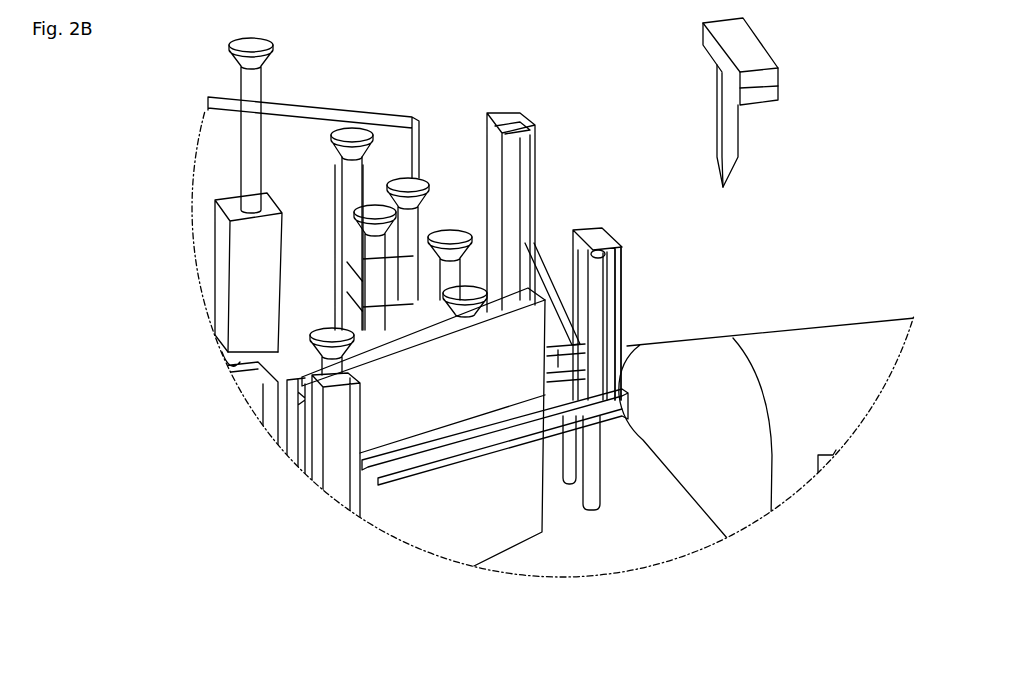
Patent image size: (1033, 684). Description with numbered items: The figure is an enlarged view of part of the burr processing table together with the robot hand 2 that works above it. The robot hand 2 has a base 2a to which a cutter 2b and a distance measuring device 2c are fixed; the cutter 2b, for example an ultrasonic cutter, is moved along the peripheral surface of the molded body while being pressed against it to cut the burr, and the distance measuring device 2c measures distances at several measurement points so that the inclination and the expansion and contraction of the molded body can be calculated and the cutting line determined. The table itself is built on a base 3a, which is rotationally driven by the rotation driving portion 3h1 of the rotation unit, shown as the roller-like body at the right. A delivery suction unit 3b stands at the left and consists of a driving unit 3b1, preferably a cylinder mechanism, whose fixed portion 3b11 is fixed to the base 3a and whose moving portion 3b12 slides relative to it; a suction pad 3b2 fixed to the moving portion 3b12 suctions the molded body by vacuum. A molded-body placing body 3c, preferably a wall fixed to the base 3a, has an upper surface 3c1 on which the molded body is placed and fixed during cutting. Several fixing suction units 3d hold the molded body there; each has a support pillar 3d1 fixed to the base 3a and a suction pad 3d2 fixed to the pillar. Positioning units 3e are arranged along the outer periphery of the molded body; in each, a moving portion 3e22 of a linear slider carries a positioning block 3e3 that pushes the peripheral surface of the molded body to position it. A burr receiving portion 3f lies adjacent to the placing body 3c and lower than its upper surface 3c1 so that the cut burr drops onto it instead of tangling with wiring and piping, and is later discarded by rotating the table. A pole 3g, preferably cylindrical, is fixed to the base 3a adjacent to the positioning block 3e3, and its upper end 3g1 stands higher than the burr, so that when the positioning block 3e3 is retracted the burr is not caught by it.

The robot hand 2 is at (762, 101).
The base 2a is at (748, 40).
The cutter 2b is at (723, 128).
The distance measuring device 2c is at (758, 97).
The base 3a is at (560, 565).
The delivery suction unit 3b is at (222, 133).
The driving unit 3b1 is at (172, 308).
The fixed portion 3b11 is at (222, 256).
The moving portion 3b12 is at (248, 160).
The suction pad 3b2 is at (245, 45).
The molded-body placing body 3c is at (420, 528).
The upper surface 3c1 is at (395, 345).
The fixing suction unit 3d is at (353, 191).
The support pillar 3d1 is at (345, 238).
The suction pad 3d2 is at (357, 128).
The positioning unit 3e is at (584, 236).
The moving portion 3e22 is at (557, 345).
The positioning block 3e3 is at (615, 313).
The burr receiving portion 3f is at (467, 441).
The pole 3g is at (593, 472).
The upper end 3g1 is at (600, 250).
The rotation driving portion 3h1 is at (735, 311).